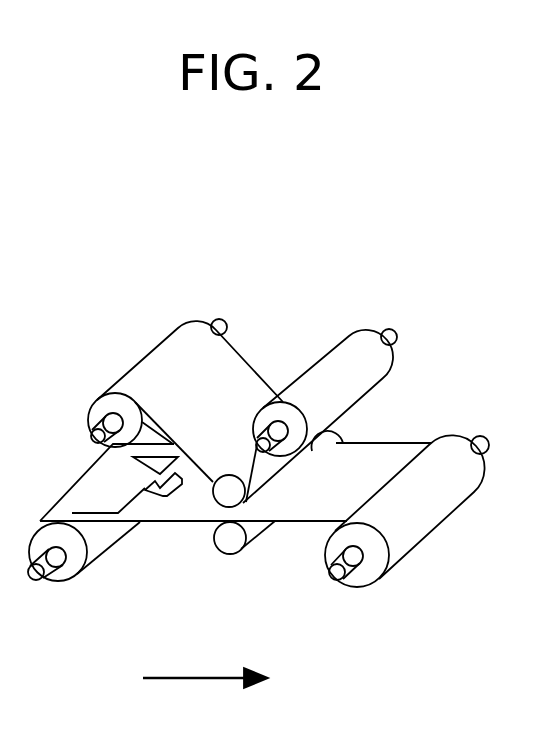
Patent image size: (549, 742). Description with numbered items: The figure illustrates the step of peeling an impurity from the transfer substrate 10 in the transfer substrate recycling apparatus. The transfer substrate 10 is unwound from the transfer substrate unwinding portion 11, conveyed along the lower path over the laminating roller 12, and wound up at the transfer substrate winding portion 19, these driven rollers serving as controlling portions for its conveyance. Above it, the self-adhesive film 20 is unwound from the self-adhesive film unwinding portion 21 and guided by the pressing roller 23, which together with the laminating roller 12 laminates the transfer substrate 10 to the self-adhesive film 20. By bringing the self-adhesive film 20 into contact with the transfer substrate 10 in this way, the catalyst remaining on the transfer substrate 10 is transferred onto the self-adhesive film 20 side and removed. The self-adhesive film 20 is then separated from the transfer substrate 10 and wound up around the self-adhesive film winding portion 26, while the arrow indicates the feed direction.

The transfer substrate 10 is at (408, 442).
The transfer substrate unwinding portion 11 is at (43, 582).
The laminating roller 12 is at (233, 563).
The transfer substrate winding portion 19 is at (348, 586).
The self-adhesive film 20 is at (155, 355).
The self-adhesive film unwinding portion 21 is at (223, 318).
The pressing roller 23 is at (236, 468).
The self-adhesive film winding portion 26 is at (391, 329).